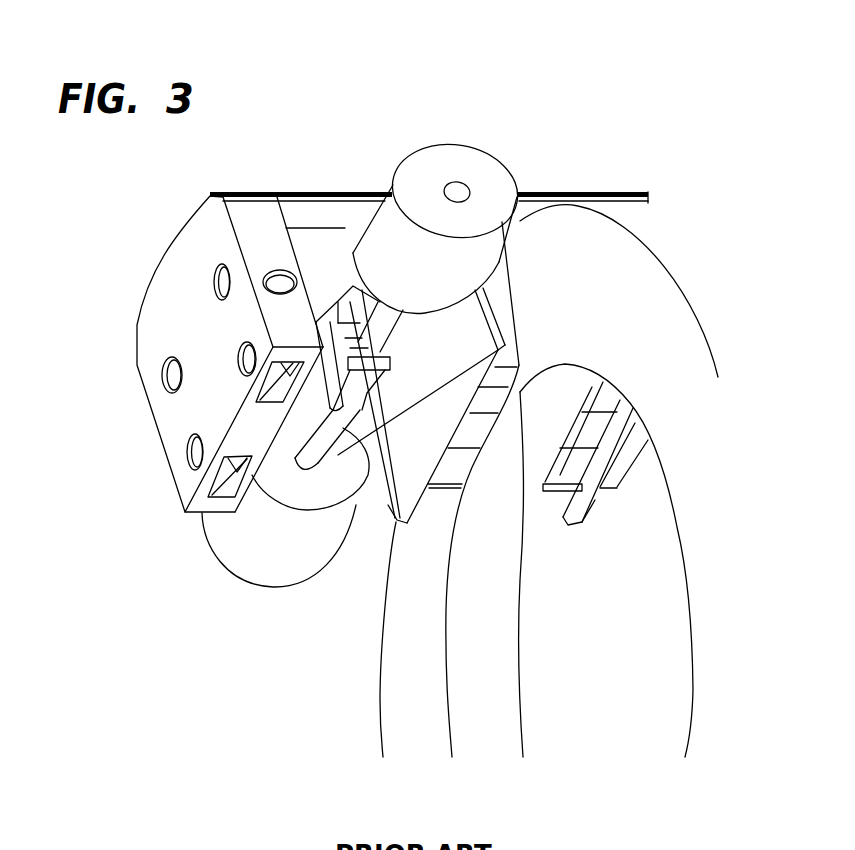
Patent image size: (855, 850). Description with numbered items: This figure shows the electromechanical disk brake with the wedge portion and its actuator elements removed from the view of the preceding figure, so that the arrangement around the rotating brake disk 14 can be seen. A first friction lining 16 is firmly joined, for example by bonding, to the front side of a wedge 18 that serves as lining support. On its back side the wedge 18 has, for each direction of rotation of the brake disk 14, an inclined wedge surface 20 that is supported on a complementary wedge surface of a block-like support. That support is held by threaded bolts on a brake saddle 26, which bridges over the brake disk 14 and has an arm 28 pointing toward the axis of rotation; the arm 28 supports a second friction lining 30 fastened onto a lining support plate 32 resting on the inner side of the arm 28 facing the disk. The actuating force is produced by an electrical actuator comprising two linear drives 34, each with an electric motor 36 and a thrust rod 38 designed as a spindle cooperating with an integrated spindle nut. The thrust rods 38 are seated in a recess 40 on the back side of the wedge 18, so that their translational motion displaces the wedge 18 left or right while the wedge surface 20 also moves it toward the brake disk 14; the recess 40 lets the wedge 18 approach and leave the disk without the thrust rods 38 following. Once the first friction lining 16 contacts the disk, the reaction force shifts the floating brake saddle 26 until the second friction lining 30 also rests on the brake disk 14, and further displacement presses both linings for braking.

The brake disk 14 is at (620, 258).
The first friction lining 16 is at (502, 300).
The wedge 18 is at (428, 456).
The wedge surface 20 is at (367, 445).
The brake saddle 26 is at (302, 215).
The arm 28 is at (623, 467).
The second friction lining 30 is at (570, 467).
The lining support plate 32 is at (582, 508).
The drive 34 is at (225, 586).
The electric motor 36 is at (293, 562).
The thrust rod 38 is at (315, 465).
The recess 40 is at (325, 311).